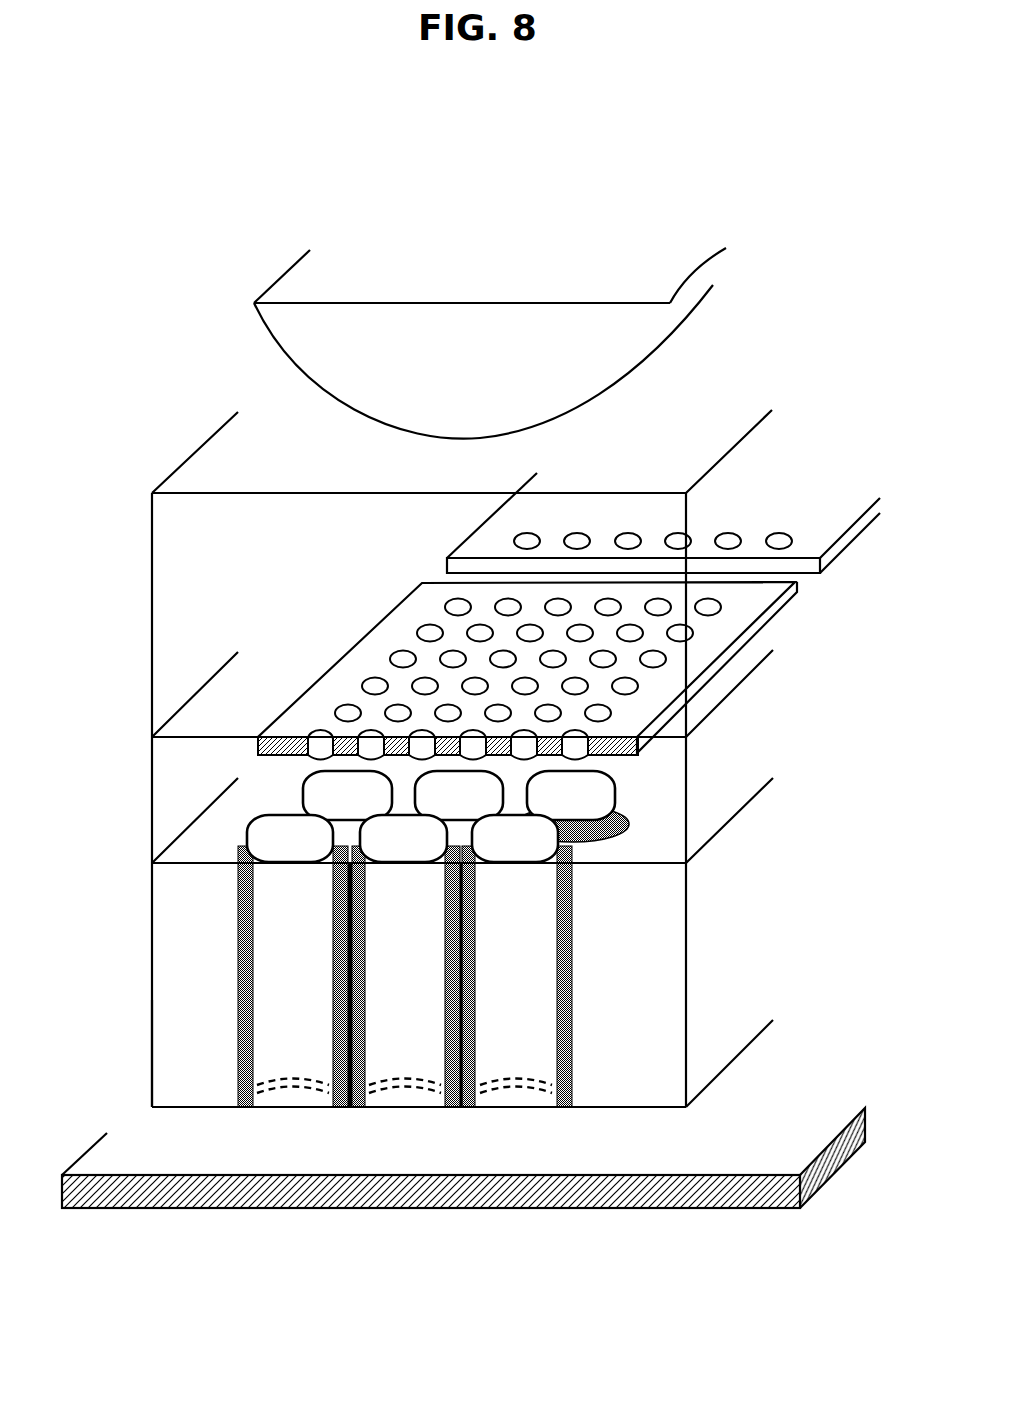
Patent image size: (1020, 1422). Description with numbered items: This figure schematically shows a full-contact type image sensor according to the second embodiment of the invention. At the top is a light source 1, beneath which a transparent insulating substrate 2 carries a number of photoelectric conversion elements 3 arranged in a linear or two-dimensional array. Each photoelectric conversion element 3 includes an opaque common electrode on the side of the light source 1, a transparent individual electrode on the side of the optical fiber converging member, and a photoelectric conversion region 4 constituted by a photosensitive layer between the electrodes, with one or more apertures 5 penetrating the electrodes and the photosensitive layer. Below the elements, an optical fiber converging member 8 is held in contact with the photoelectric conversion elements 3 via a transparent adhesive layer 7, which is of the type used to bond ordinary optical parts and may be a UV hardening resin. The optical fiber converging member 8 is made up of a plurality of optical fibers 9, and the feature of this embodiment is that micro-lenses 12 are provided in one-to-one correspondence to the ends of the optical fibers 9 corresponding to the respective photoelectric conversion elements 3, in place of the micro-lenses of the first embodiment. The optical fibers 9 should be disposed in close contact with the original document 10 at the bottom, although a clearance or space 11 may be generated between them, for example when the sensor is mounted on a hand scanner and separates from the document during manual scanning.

The light source 1 is at (302, 285).
The transparent insulating substrate 2 is at (182, 636).
The photoelectric conversion element 3 is at (580, 616).
The photoelectric conversion region 4 is at (427, 608).
The aperture 5 is at (403, 658).
The adhesive layer 7 is at (745, 749).
The optical fiber converging member 8 is at (747, 926).
The optical fiber 9 is at (540, 976).
The original document 10 is at (103, 1160).
The clearance or space 11 is at (652, 1141).
The micro-lens 12 is at (580, 797).